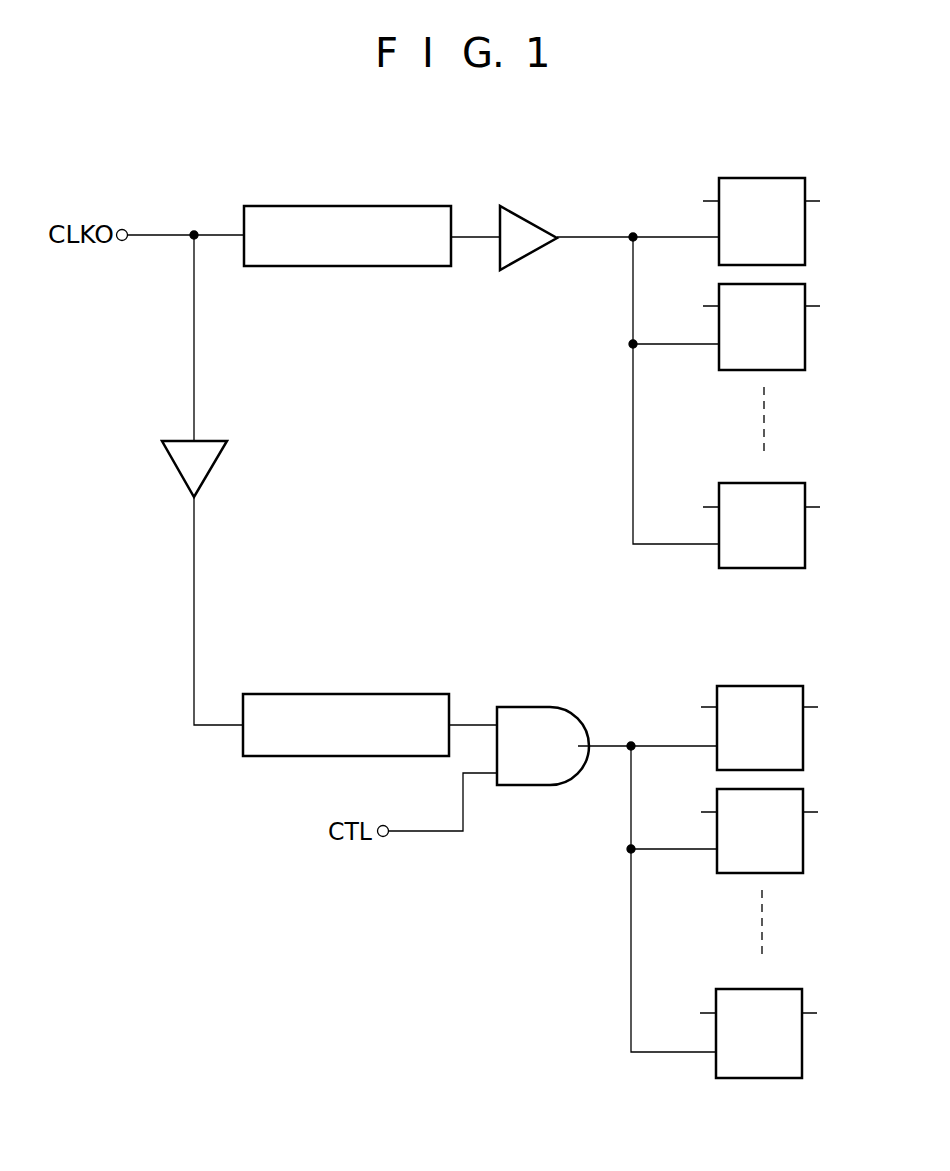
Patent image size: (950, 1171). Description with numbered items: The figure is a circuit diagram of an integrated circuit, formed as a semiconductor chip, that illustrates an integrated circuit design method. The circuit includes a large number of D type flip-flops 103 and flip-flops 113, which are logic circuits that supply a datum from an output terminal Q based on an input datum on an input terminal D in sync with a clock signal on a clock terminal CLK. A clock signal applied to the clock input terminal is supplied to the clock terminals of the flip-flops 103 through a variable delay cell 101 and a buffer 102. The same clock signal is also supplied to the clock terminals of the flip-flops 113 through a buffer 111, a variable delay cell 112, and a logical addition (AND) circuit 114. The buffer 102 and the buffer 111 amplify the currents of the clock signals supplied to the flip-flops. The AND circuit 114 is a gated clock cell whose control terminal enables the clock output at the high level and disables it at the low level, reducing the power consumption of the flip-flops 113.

The variable delay cell 101 is at (386, 206).
The buffer 102 is at (527, 217).
The D type flip-flops 103 is at (765, 179).
The buffer 111 is at (212, 470).
The variable delay cell 112 is at (393, 694).
The D type flip-flops 113 is at (737, 686).
The logical addition (AND) circuit 114 is at (522, 707).